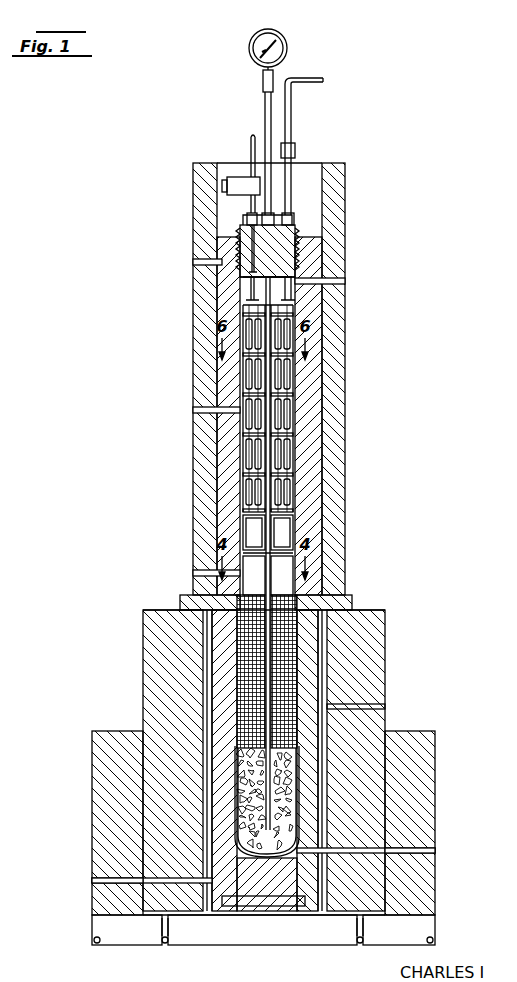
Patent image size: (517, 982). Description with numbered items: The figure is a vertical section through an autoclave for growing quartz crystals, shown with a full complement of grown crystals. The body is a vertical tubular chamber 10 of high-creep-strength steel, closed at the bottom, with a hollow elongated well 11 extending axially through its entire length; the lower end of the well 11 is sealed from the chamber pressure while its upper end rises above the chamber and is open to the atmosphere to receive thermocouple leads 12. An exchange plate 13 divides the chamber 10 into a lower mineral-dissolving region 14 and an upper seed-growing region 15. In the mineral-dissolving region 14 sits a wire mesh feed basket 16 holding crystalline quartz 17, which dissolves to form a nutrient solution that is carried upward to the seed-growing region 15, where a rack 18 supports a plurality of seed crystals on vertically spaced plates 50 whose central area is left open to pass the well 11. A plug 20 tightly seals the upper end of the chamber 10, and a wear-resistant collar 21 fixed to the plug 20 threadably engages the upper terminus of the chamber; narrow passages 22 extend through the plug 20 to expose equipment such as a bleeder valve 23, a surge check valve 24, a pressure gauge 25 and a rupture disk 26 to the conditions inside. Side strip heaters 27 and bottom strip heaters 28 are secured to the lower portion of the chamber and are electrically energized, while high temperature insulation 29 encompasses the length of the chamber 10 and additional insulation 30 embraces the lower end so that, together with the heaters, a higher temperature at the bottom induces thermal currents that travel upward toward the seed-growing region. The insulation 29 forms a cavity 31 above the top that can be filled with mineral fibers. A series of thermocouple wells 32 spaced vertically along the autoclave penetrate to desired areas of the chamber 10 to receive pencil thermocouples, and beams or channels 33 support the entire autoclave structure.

The vertical tubular chamber 10 is at (300, 403).
The hollow elongated well 11 is at (290, 286).
The thermocouple leads 12 is at (292, 144).
The exchange plate 13 is at (225, 576).
The mineral-dissolving region 14 is at (292, 582).
The seed-growing region 15 is at (298, 443).
The wire mesh feed basket 16 is at (290, 668).
The crystalline quartz 17 is at (300, 828).
The rack 18 is at (228, 408).
The plug 20 is at (258, 280).
The wear-resistant collar 21 is at (294, 240).
The narrow passages 22 is at (298, 242).
The bleeder valve 23 is at (232, 177).
The surge check valve 24 is at (272, 84).
The pressure gauge 25 is at (286, 40).
The rupture disk 26 is at (297, 150).
The side strip heaters 27 is at (325, 628).
The bottom strip heaters 28 is at (235, 905).
The high temperature insulation 29 is at (202, 324).
The additional insulation 30 is at (410, 760).
The cavity 31 is at (300, 182).
The thermocouple wells 32 is at (200, 262).
The beams or channels 33 is at (170, 935).
The vertically spaced plates 50 is at (298, 502).